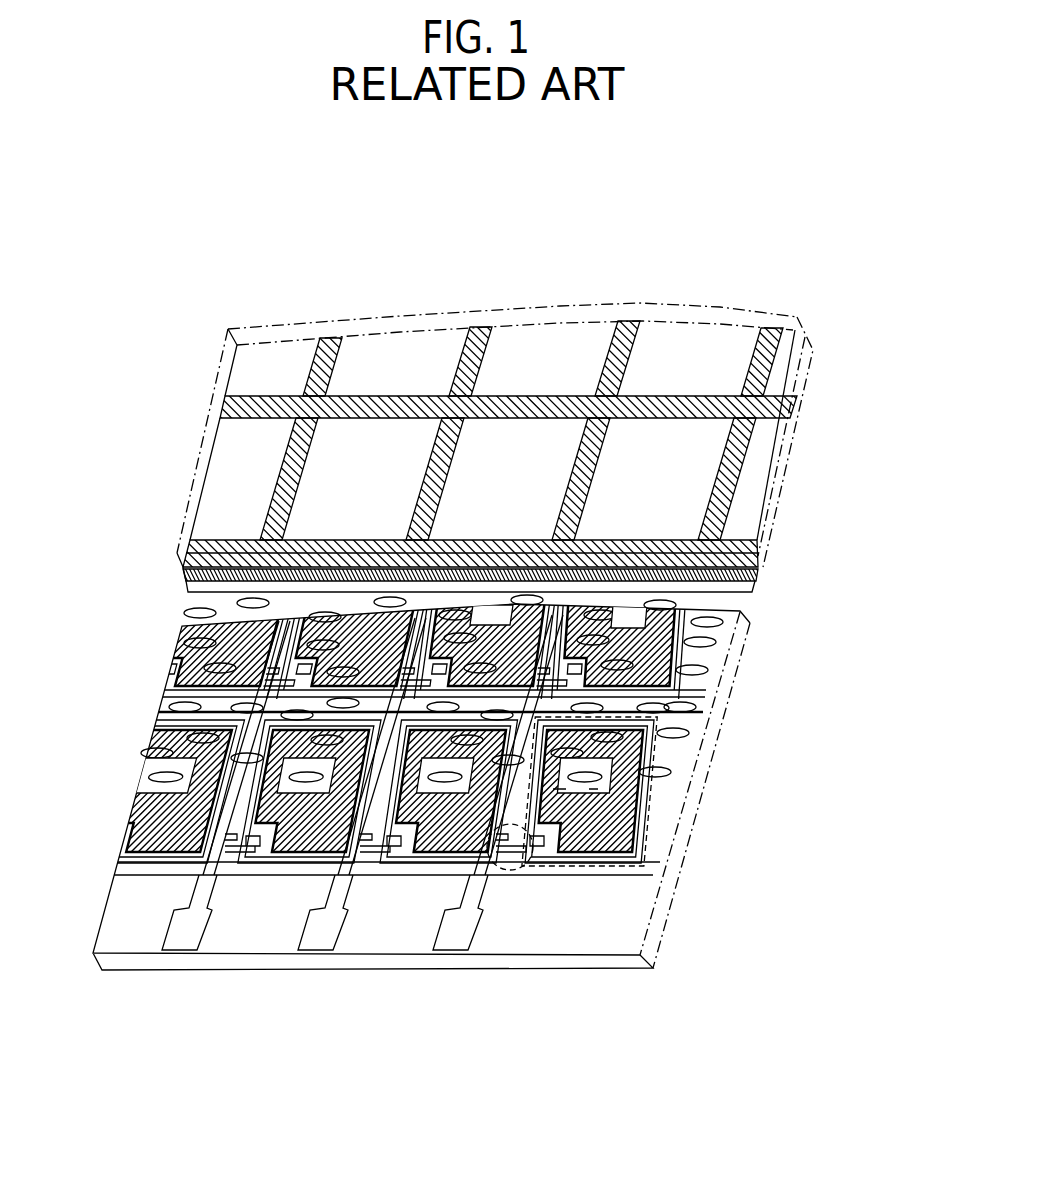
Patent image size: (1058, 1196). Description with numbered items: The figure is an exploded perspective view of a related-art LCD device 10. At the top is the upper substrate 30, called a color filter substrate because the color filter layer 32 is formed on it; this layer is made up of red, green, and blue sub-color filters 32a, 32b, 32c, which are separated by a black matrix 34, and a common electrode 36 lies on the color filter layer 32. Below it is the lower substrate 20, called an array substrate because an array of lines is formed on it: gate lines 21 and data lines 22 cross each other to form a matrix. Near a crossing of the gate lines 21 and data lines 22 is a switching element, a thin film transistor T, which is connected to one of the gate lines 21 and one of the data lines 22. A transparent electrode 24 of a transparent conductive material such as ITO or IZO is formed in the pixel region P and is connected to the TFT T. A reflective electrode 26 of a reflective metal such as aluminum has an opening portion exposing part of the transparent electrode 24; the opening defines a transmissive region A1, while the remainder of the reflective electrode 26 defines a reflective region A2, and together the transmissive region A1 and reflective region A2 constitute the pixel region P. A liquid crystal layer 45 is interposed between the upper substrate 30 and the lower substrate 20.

The LCD device 10 is at (817, 272).
The lower substrate 20 is at (610, 963).
The gate lines 21 is at (622, 872).
The data lines 22 is at (465, 900).
The transparent electrode 24 is at (625, 793).
The reflective electrode 26 is at (620, 817).
The upper substrate 30 is at (177, 552).
The color filter layer 32 is at (527, 210).
The red sub-color filter 32a is at (563, 350).
The green sub-color filter 32b is at (690, 333).
The blue sub-color filter 32c is at (420, 350).
The black matrix 34 is at (757, 567).
The common electrode 36 is at (757, 577).
The liquid crystal layer 45 is at (160, 605).
The pixel region P is at (638, 772).
The thin film transistor T is at (535, 867).
The transmissive region A1 is at (576, 790).
The reflective region A2 is at (574, 790).